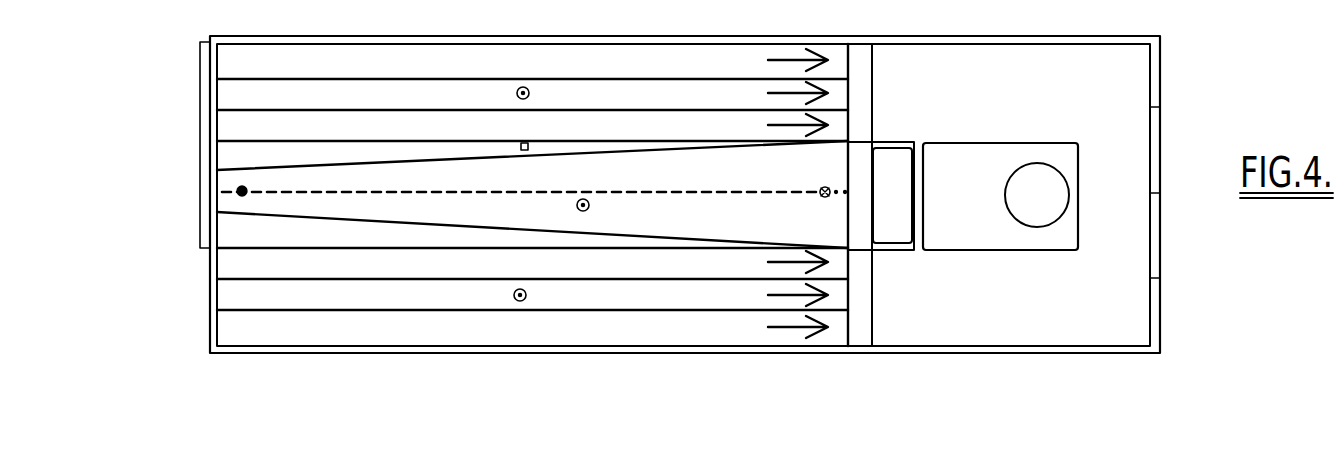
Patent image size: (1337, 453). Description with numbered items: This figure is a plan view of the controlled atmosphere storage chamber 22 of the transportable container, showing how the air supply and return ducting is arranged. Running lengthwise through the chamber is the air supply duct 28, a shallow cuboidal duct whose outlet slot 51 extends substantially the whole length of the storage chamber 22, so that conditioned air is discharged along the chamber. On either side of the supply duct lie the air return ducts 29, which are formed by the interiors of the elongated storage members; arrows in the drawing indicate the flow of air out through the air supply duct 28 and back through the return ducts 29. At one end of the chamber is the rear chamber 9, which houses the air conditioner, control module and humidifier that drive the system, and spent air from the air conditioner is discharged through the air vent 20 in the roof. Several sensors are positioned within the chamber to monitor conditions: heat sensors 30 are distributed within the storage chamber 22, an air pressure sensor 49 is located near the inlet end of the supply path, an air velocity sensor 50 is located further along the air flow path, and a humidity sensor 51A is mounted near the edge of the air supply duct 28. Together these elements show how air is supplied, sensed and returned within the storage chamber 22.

The rear chamber 9 is at (1115, 100).
The air vent 20 is at (1046, 191).
The controlled atmosphere storage chamber 22 is at (284, 58).
The air supply duct 28 is at (798, 167).
The air return ducts 29 is at (585, 267).
The heat sensors 30 is at (530, 93).
The air pressure sensor 49 is at (242, 186).
The air velocity sensor 50 is at (826, 200).
The outlet slot 51 is at (729, 195).
The humidity sensor 51A is at (523, 143).